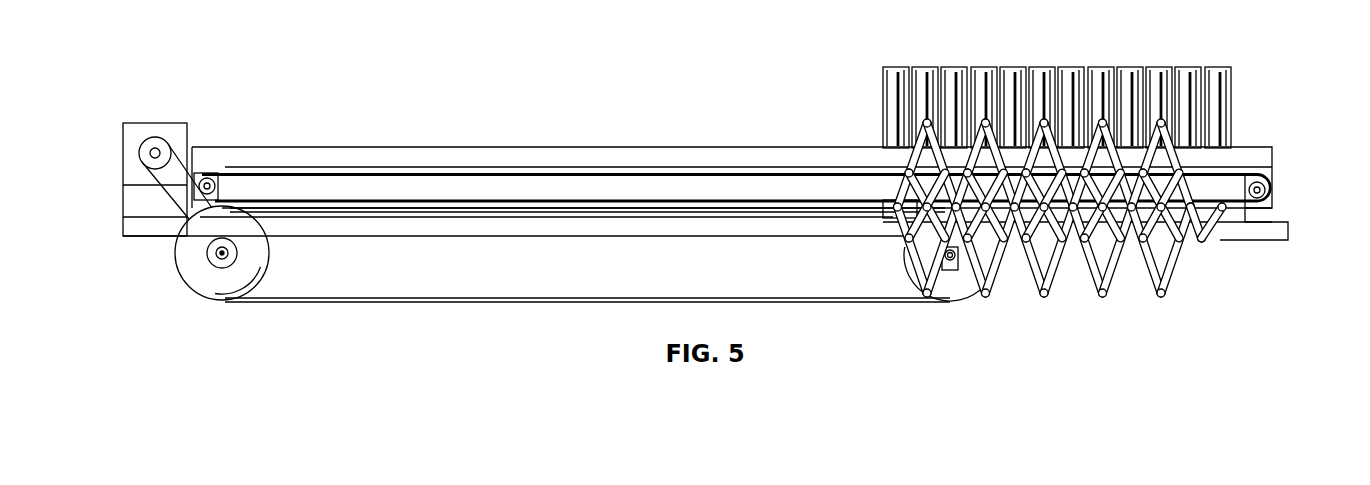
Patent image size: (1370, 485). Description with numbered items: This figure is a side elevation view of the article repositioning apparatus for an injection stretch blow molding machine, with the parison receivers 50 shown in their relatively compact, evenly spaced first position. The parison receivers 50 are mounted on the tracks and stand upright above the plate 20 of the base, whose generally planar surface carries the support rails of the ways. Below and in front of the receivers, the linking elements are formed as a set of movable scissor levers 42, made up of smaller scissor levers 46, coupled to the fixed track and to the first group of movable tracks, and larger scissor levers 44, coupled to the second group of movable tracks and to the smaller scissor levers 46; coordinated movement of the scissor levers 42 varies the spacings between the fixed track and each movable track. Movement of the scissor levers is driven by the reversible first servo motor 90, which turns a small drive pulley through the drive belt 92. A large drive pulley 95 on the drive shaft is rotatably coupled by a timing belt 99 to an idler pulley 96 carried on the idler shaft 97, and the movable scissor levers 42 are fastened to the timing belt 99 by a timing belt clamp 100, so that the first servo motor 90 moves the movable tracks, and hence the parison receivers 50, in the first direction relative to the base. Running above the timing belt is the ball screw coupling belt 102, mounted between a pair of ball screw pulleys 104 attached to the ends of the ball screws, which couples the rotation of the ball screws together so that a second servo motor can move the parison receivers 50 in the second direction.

The plate 20 is at (1277, 232).
The movable scissor levers 42 is at (1198, 244).
The larger scissor levers 44 is at (1147, 258).
The smaller scissor levers 46 is at (1217, 233).
The parison receivers 50 is at (1222, 65).
The first servo motor 90 is at (132, 140).
The drive belt 92 is at (171, 157).
The large drive pulley 95 is at (198, 270).
The idler pulley 96 is at (953, 283).
The idler shaft 97 is at (968, 280).
The timing belt 99 is at (455, 297).
The timing belt clamp 100 is at (885, 220).
The ball screw coupling belt 102 is at (297, 173).
The ball screw pulleys 104 is at (197, 173).